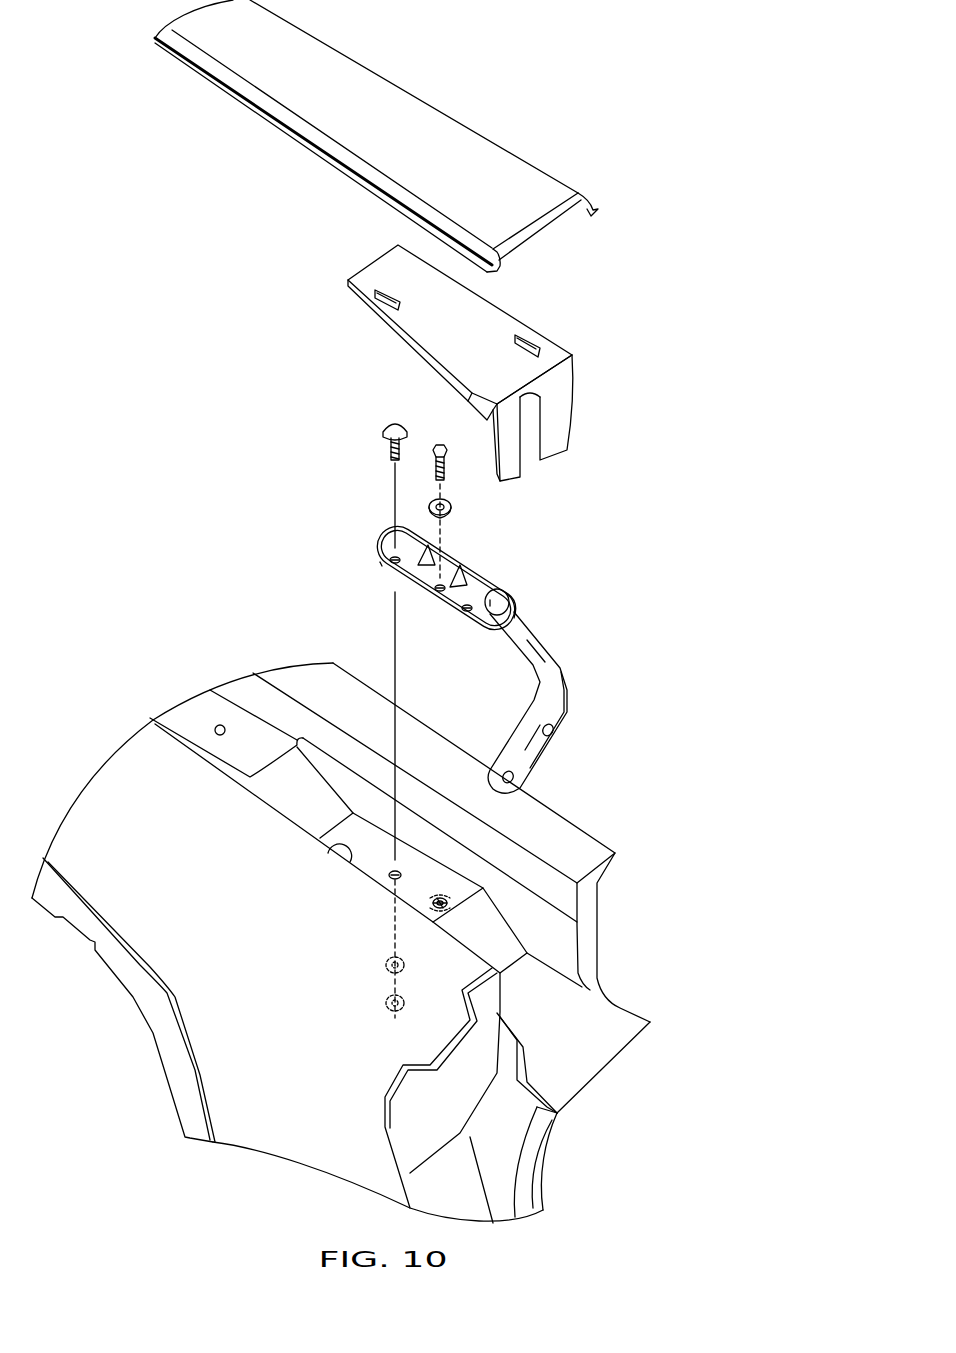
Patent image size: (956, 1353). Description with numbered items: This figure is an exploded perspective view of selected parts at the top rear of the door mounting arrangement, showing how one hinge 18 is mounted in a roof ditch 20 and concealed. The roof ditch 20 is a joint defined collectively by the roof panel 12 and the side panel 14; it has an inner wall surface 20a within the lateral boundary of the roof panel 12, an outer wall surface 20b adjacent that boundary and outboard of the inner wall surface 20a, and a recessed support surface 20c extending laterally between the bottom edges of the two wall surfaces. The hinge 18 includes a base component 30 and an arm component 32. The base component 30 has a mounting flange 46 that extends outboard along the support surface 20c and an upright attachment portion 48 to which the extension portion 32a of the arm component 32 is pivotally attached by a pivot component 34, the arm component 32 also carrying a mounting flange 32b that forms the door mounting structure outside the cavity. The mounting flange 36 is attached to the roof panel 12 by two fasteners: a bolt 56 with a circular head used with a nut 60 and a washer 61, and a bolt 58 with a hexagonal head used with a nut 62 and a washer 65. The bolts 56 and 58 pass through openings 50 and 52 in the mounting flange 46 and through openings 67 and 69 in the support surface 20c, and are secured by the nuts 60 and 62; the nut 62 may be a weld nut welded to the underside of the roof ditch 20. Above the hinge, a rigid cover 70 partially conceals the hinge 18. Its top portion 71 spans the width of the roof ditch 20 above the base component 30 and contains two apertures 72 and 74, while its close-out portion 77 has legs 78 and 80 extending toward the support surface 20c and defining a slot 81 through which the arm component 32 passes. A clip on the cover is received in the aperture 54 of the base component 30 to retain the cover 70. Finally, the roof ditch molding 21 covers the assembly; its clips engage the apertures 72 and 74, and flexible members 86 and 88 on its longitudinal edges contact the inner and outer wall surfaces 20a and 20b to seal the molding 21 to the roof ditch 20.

The roof ditch molding 21 is at (403, 151).
The flexible member 86 is at (590, 212).
The flexible member 88 is at (495, 274).
The cover 70 is at (496, 364).
The top portion 71 is at (393, 268).
The aperture 72 is at (378, 308).
The aperture 74 is at (530, 338).
The close-out portion 77 is at (565, 375).
The leg 78 is at (555, 422).
The leg 80 is at (508, 465).
The slot 81 is at (528, 440).
The bolt 56 is at (393, 423).
The bolt 58 is at (440, 443).
The washer 65 is at (452, 507).
The hinge 18 is at (472, 656).
The base component 30 is at (415, 602).
The mounting flange 46 is at (383, 563).
The upright attachment portion 48 is at (488, 577).
The opening 50 is at (390, 557).
The opening 52 is at (440, 594).
The aperture 54 is at (467, 613).
The pivot component 34 is at (493, 607).
The arm component 32 is at (546, 702).
The extension portion 32a is at (540, 670).
The mounting flange 32b is at (530, 752).
The mounting flange 36 is at (517, 780).
The roof panel 12 is at (576, 838).
The side panel 14 is at (95, 827).
The roof ditch 20 is at (337, 943).
The inner wall surface 20a is at (425, 840).
The outer wall surface 20b is at (348, 866).
The recessed support surface 20c is at (373, 847).
The opening 67 is at (392, 880).
The opening 69 is at (437, 912).
The nut 62 is at (463, 897).
The washer 61 is at (380, 957).
The nut 60 is at (368, 992).